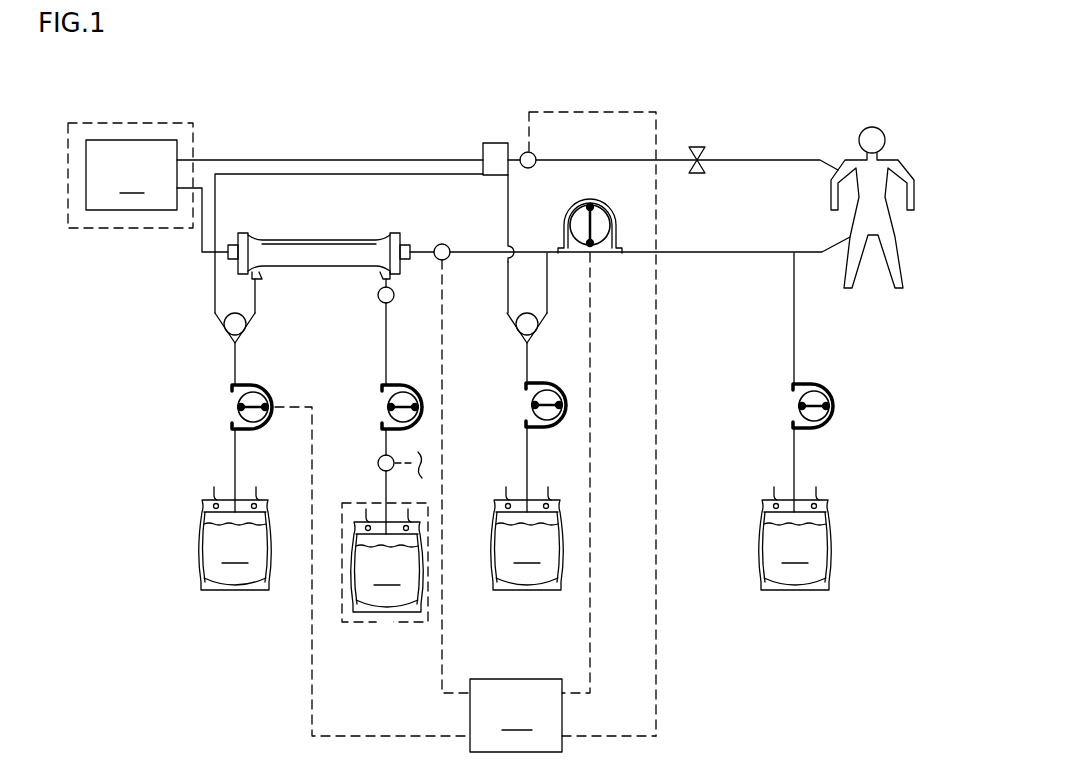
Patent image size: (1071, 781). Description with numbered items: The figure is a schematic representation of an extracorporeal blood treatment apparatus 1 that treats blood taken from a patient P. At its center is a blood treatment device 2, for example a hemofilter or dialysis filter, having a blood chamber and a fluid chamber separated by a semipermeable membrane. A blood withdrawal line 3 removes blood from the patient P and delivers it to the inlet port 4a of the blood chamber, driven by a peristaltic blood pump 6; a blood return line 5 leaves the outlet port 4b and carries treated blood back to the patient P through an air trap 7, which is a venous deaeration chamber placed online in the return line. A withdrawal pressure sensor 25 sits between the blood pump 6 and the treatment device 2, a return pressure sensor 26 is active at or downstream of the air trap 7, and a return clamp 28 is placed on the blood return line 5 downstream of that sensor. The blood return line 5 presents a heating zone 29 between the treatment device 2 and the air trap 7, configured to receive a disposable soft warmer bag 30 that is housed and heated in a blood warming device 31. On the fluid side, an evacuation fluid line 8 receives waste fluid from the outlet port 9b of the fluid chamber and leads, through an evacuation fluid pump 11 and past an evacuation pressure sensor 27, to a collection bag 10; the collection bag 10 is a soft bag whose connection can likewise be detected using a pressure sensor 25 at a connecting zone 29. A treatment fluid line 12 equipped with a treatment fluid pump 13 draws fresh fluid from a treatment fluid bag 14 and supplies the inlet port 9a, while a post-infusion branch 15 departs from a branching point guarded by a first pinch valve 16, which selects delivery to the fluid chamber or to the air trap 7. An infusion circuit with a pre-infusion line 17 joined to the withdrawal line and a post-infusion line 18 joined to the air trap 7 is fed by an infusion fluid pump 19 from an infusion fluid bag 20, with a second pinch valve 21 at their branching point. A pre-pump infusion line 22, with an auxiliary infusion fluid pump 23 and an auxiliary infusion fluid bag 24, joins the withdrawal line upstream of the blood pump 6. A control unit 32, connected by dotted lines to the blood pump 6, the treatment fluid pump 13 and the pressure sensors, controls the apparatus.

The extracorporeal blood treatment apparatus 1 is at (872, 55).
The blood treatment device 2 is at (325, 230).
The blood withdrawal line 3 is at (712, 266).
The inlet port 4a is at (405, 240).
The outlet port 4b is at (232, 259).
The blood return line 5 is at (755, 155).
The blood pump 6 is at (612, 204).
The air trap 7 is at (495, 143).
The evacuation fluid line 8 is at (345, 520).
The inlet port 9a is at (260, 282).
The outlet port 9b is at (380, 282).
The collection bag 10 is at (387, 560).
The evacuation fluid pump 11 is at (383, 398).
The treatment fluid line 12 is at (224, 449).
The treatment fluid pump 13 is at (232, 395).
The treatment fluid bag 14 is at (235, 538).
The post-infusion branch 15 is at (318, 158).
The first pinch valve 16 is at (228, 327).
The pre-infusion line 17 is at (548, 290).
The post-infusion line 18 is at (510, 228).
The infusion fluid pump 19 is at (555, 425).
The infusion fluid bag 20 is at (527, 538).
The second pinch valve 21 is at (512, 325).
The pre-pump infusion line 22 is at (797, 325).
The auxiliary infusion fluid pump 23 is at (818, 428).
The auxiliary infusion fluid bag 24 is at (795, 538).
The withdrawal pressure sensor 25 is at (442, 244).
The return pressure sensor 26 is at (528, 152).
The evacuation pressure sensor 27 is at (393, 300).
The return clamp 28 is at (697, 147).
The heating zone 29 is at (175, 97).
The soft warmer bag 30 is at (131, 175).
The blood warming device 31 is at (104, 120).
The control unit 32 is at (563, 715).
The patient P is at (873, 180).